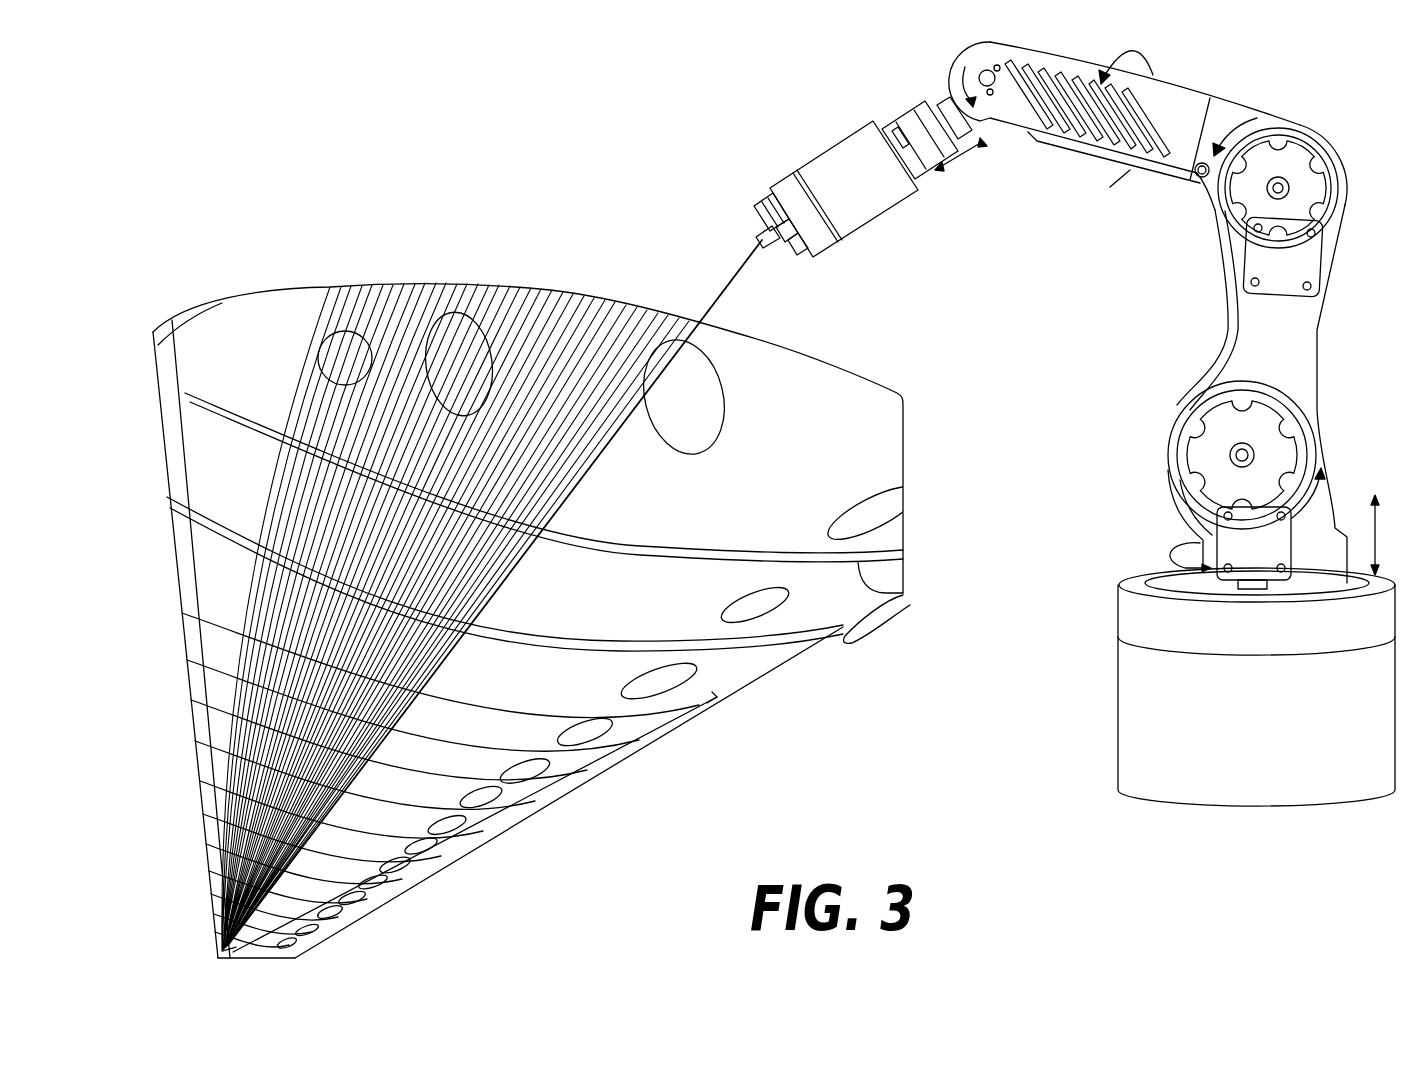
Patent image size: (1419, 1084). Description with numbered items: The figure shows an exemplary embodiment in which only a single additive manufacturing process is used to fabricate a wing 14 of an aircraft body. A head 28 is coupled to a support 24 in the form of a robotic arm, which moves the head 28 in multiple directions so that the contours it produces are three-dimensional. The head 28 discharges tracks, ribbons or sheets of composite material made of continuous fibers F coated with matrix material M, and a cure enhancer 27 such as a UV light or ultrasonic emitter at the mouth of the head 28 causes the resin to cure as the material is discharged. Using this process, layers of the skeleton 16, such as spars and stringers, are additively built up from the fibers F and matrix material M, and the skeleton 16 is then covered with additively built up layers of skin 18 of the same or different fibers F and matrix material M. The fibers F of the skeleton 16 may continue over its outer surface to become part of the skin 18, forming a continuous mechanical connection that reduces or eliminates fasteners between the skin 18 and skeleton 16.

The wing 14 is at (331, 185).
The internal skeleton 16 is at (897, 590).
The external skin 18 is at (218, 490).
The support 24 is at (1281, 355).
The cure enhancer 27 is at (783, 250).
The head 28 is at (865, 194).
The continuous fiber F is at (210, 477).
The matrix material M is at (210, 920).